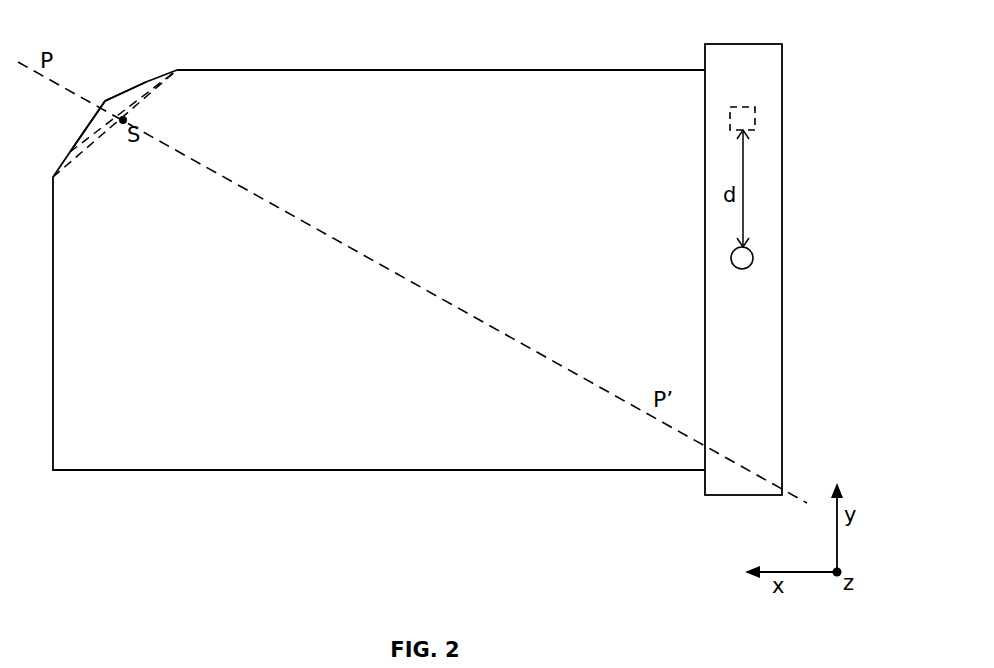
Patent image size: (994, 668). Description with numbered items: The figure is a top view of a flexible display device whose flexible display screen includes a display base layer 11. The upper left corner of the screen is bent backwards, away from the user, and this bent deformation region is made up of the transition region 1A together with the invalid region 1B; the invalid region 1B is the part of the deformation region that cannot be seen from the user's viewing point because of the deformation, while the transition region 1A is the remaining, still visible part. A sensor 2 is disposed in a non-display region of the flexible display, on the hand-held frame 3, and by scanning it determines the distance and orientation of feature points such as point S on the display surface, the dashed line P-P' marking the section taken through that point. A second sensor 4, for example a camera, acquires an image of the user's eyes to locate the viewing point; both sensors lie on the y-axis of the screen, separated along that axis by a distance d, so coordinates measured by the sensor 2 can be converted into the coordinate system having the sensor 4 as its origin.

The transition region 1A is at (148, 81).
The invalid region 1B is at (108, 101).
The sensor 2 is at (755, 121).
The hand-held frame 3 is at (782, 182).
The sensor 4 is at (753, 258).
The display base layer 11 is at (655, 332).